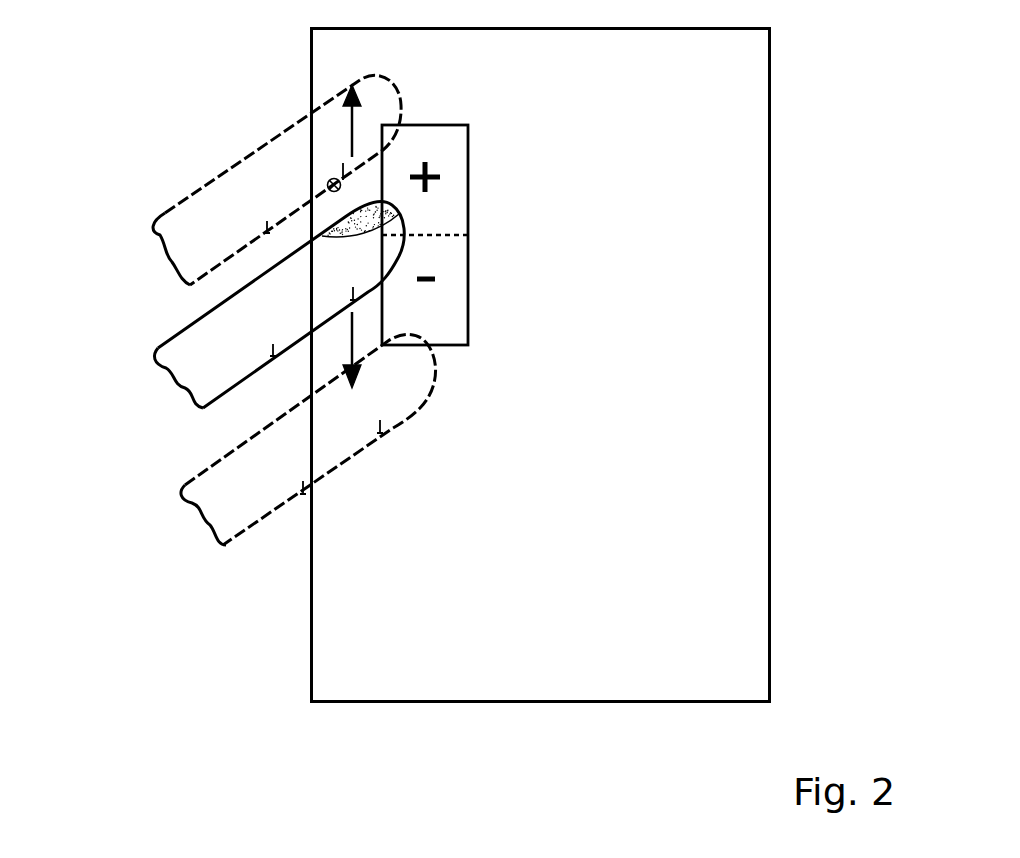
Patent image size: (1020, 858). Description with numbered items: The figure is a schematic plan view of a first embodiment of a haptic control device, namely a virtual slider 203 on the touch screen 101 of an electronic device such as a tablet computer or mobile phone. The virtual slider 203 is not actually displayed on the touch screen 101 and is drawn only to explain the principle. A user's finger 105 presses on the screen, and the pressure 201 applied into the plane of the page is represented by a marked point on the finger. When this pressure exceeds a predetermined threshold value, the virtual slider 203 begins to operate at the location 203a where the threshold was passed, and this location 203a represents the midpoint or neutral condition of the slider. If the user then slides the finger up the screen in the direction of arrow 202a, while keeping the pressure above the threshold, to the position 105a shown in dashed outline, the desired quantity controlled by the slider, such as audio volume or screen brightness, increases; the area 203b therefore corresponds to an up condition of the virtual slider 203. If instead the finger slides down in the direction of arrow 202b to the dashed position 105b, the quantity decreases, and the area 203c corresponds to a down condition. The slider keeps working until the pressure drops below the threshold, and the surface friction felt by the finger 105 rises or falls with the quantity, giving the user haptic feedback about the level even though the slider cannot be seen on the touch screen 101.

The touch screen 101 is at (758, 61).
The user's finger 105 is at (200, 358).
The upper finger position 105a is at (183, 222).
The lower finger position 105b is at (218, 481).
The applied pressure 201 is at (328, 176).
The upward arrow 202a is at (362, 97).
The downward arrow 202b is at (363, 367).
The virtual slider 203 is at (457, 336).
The midpoint location 203a is at (468, 235).
The up condition area 203b is at (468, 140).
The down condition area 203c is at (468, 308).